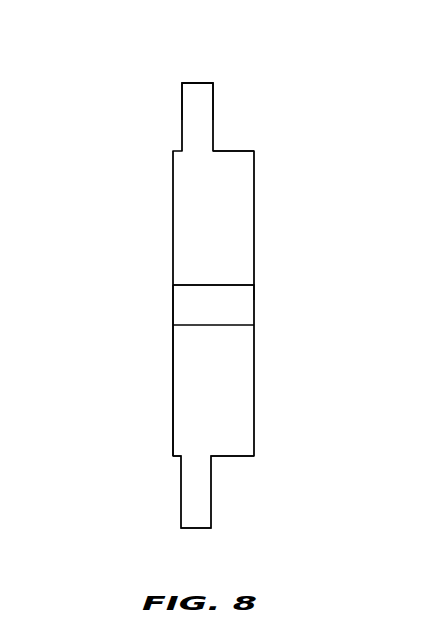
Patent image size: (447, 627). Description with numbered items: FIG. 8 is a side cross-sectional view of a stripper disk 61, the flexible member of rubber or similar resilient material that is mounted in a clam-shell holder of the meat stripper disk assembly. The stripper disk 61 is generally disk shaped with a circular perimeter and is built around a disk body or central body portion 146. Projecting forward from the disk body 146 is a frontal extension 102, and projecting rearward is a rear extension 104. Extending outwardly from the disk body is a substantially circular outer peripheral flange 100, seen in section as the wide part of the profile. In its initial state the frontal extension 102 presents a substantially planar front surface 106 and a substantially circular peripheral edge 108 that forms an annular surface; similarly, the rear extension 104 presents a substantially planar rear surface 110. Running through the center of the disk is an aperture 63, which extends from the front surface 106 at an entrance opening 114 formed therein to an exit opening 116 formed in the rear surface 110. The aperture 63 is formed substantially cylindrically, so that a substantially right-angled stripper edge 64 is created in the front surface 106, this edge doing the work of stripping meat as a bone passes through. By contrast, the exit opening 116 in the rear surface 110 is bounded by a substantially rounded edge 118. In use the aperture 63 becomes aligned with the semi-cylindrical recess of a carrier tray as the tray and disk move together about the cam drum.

The stripper disk 61 is at (253, 66).
The outer peripheral flange 100 is at (196, 92).
The rear extension 104 is at (160, 118).
The peripheral edge 108 is at (236, 151).
The frontal extension 102 is at (280, 208).
The rounded edge 118 is at (173, 285).
The aperture 63 is at (247, 299).
The stripper edge 64 is at (253, 325).
The entrance opening 114 is at (295, 313).
The exit opening 116 is at (135, 309).
The front surface 106 is at (254, 392).
The rear surface 110 is at (173, 380).
The disk body 146 is at (190, 432).